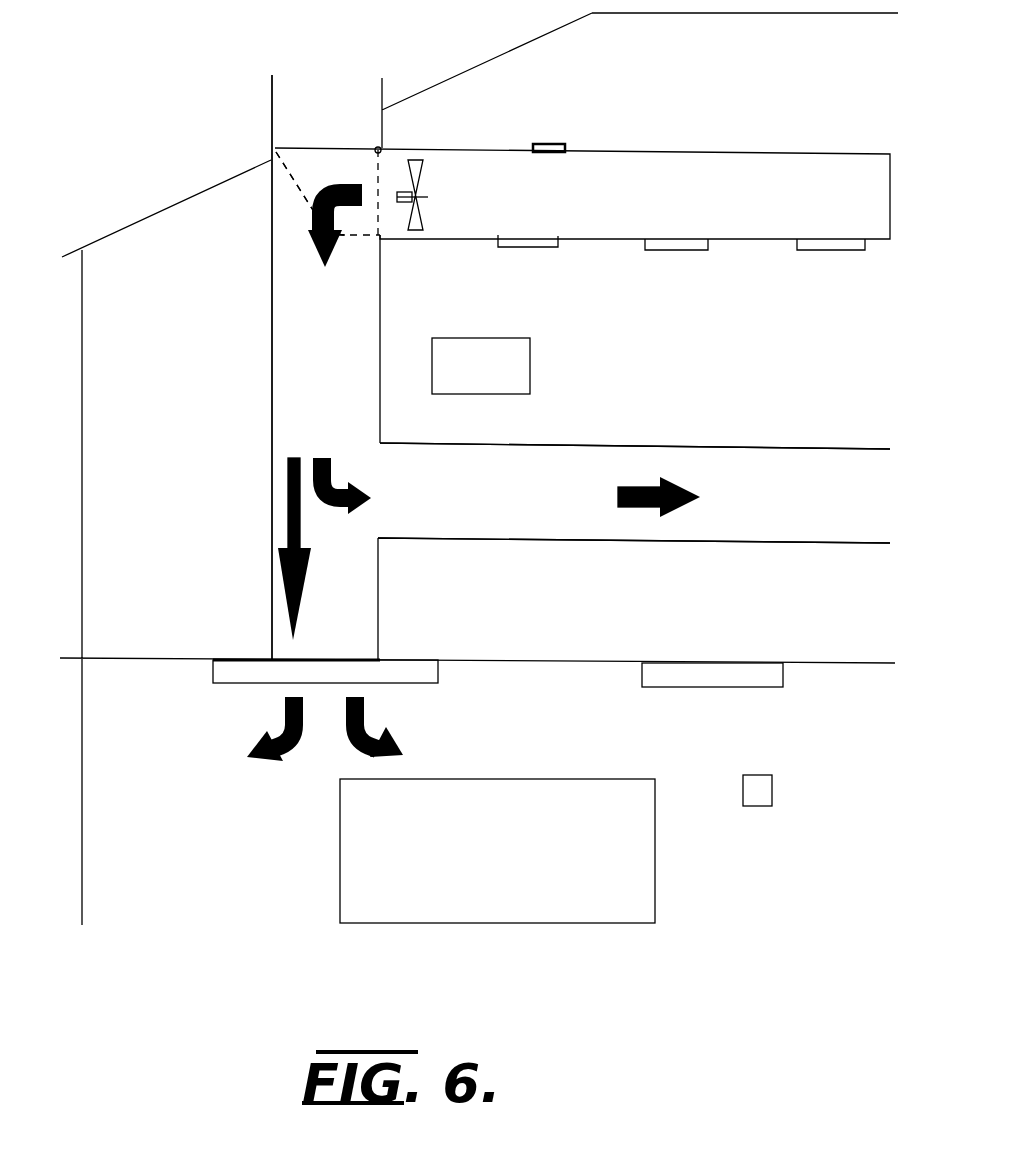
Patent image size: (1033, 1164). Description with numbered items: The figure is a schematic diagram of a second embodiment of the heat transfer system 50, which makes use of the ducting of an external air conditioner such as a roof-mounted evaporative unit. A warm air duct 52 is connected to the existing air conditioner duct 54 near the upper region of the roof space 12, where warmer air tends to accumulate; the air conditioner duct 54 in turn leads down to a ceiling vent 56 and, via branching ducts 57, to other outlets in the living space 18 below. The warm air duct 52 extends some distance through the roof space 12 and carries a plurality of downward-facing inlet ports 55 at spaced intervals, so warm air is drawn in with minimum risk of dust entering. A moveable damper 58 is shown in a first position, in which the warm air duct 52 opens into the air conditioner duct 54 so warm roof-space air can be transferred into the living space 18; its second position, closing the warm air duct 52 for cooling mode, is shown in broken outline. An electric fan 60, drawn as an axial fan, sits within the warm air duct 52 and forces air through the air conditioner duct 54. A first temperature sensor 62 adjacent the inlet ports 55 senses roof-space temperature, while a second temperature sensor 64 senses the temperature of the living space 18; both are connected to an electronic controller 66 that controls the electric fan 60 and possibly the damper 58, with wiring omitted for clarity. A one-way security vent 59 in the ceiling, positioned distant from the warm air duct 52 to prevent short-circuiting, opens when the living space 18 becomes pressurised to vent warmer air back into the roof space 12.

The roof space 12 is at (138, 416).
The living space 18 is at (168, 846).
The heat transfer system 50 is at (602, 334).
The warm air duct 52 is at (448, 239).
The air conditioner duct 54 is at (270, 355).
The inlet ports 55 is at (685, 251).
The ceiling vent 56 is at (228, 685).
The branching ducts 57 is at (615, 542).
The damper 58 is at (320, 148).
The security vent 59 is at (713, 688).
The electric fan 60 is at (420, 178).
The first temperature sensor 62 is at (556, 143).
The second temperature sensor 64 is at (760, 791).
The electronic controller 66 is at (530, 370).